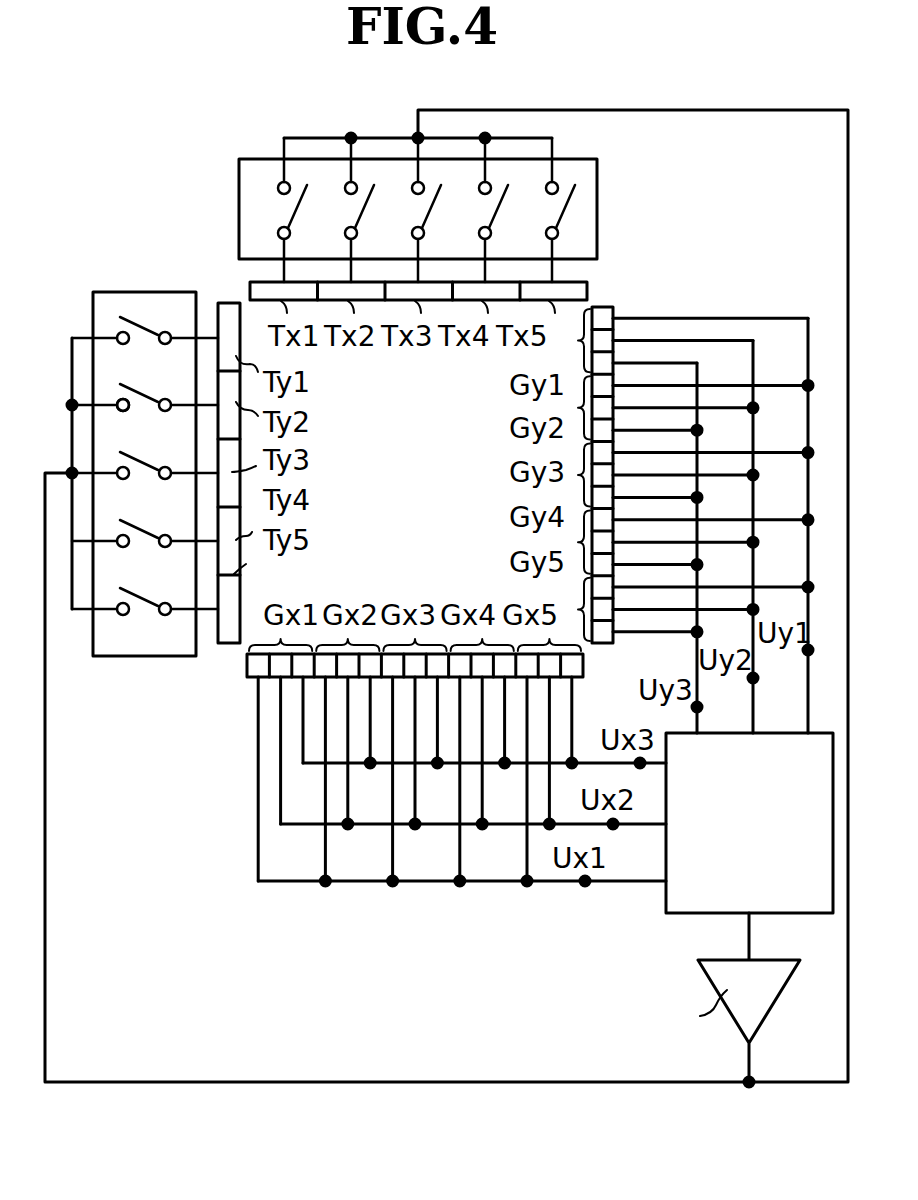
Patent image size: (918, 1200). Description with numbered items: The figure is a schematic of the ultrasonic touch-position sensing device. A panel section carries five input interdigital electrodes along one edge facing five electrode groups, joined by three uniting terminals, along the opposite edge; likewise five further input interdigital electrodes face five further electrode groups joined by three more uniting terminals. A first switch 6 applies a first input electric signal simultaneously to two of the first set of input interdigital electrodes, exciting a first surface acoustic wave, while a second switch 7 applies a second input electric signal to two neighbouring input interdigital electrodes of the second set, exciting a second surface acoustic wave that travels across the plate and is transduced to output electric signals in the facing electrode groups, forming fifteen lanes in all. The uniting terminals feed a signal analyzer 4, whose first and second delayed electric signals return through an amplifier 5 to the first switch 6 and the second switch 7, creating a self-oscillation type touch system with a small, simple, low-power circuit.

The signal analyzer 4 is at (749, 823).
The amplifier 5 is at (685, 1000).
The first switch 6 is at (587, 218).
The second switch 7 is at (128, 645).